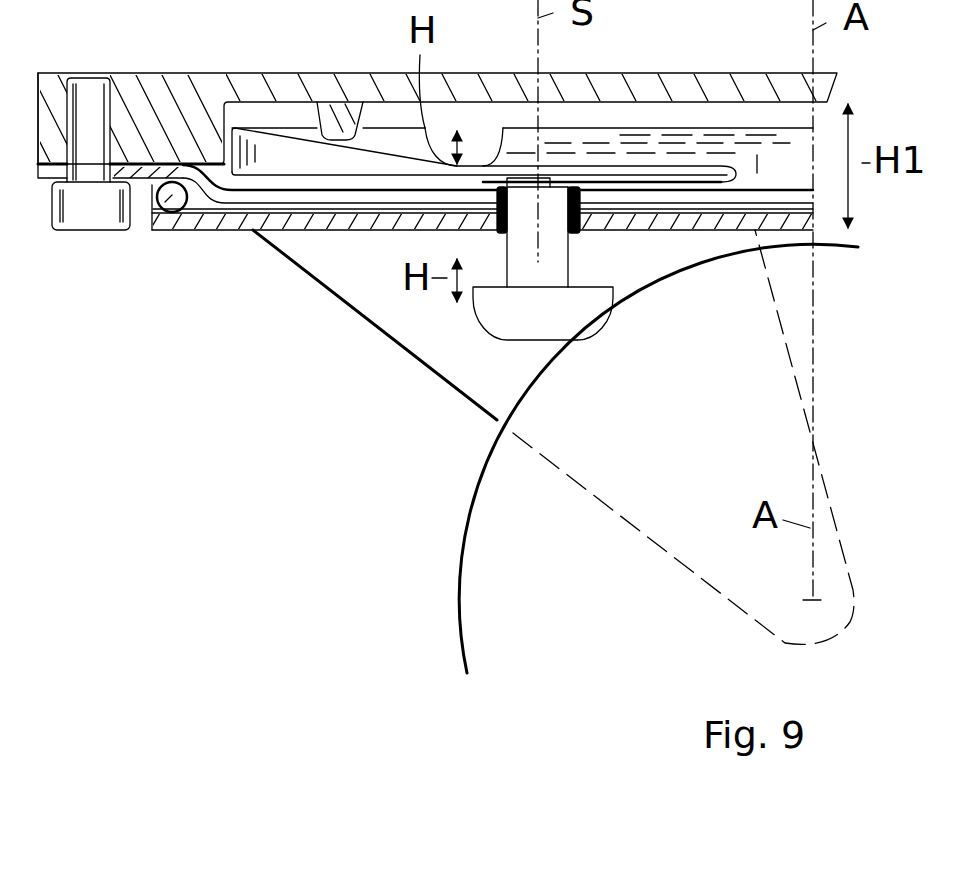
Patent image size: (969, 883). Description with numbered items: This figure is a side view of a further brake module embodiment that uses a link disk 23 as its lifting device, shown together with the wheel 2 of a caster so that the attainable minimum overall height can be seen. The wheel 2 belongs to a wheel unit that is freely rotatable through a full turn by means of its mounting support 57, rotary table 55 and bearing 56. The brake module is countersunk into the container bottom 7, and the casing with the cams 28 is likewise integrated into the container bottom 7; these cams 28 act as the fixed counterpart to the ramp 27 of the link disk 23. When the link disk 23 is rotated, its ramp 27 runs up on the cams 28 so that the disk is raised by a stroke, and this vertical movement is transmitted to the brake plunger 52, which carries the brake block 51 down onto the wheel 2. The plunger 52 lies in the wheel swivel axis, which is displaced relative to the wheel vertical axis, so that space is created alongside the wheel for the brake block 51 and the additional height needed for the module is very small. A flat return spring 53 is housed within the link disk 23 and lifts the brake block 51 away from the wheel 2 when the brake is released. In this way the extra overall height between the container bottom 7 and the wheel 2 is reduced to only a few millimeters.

The wheel unit 2 is at (460, 588).
The container bottom 7 is at (150, 88).
The link disk 23 is at (570, 140).
The ramp 27 is at (298, 128).
The cam 28 is at (340, 140).
The brake block 51 is at (502, 318).
The plunger 52 is at (560, 253).
The return spring 53 is at (730, 163).
The rotary table 55 is at (247, 197).
The bearing 56 is at (152, 225).
The mounting support 57 is at (470, 405).